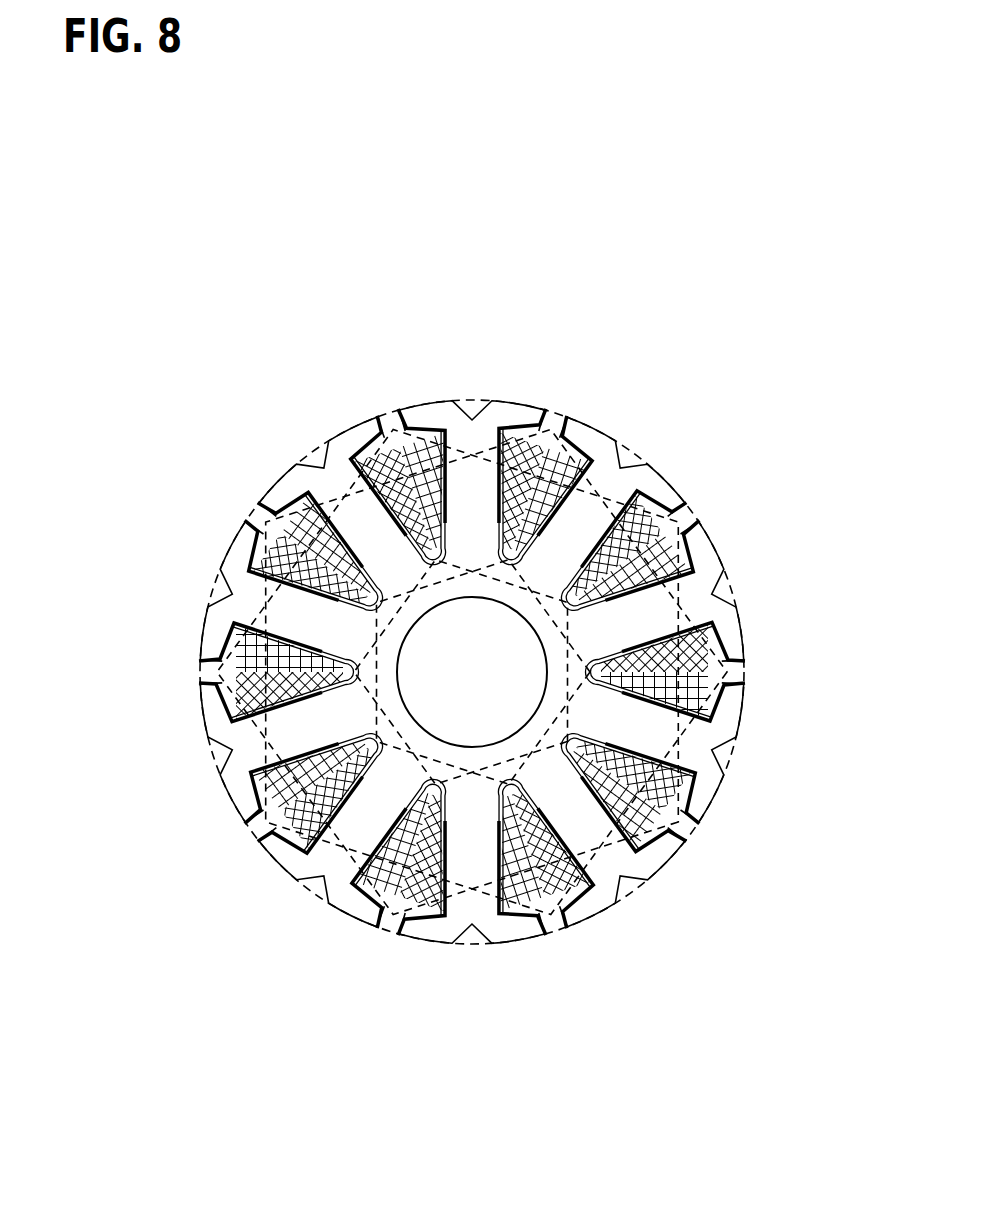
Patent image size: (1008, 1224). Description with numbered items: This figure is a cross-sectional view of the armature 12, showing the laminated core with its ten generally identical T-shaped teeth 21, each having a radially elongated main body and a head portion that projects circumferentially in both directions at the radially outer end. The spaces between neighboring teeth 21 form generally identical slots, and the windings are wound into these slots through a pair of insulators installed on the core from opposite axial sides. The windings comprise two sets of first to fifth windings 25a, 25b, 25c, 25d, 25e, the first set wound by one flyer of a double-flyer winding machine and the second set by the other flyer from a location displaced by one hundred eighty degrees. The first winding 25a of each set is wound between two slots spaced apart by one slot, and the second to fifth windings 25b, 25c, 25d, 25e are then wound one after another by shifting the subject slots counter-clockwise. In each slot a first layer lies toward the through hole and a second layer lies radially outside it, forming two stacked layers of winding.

The stator 12 is at (138, 158).
The tooth 21 is at (238, 607).
The first winding 25a is at (565, 492).
The second winding 25b is at (662, 565).
The third winding 25c is at (392, 530).
The fourth winding 25d is at (500, 500).
The fifth winding 25e is at (400, 462).